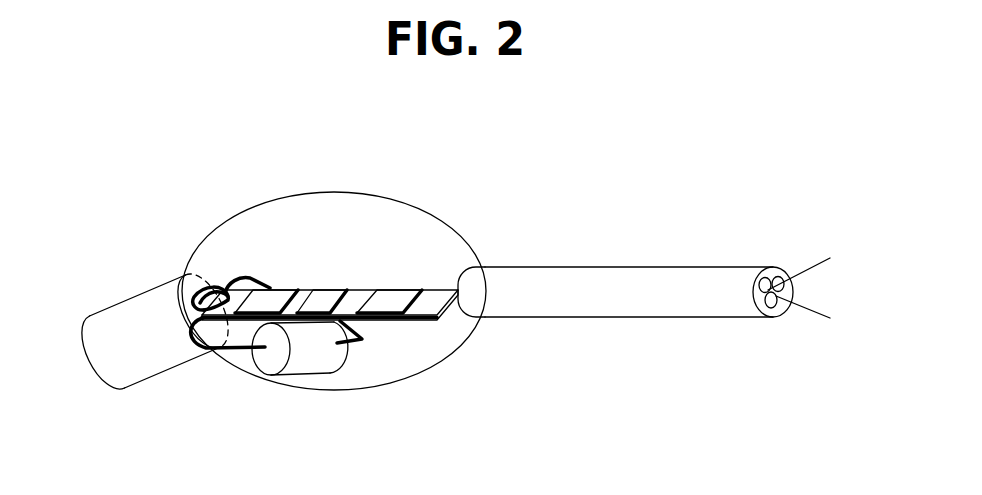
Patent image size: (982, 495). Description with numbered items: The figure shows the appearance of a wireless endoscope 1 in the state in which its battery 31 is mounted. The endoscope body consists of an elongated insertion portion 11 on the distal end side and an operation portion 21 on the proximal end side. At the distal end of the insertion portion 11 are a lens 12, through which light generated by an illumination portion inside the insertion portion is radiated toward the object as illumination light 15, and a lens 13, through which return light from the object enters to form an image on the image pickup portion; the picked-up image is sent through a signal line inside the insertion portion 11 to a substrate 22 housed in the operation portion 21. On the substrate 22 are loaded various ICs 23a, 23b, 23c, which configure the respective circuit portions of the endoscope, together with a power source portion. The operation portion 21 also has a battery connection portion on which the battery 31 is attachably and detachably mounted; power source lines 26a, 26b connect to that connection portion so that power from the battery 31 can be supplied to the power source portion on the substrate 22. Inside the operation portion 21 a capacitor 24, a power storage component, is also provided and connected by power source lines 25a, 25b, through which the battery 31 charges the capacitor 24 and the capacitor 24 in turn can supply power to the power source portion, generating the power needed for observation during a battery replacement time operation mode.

The wireless endoscope 1 is at (507, 213).
The insertion portion 11 is at (622, 266).
The lens 12 is at (768, 297).
The lens 13 is at (777, 305).
The illumination light 15 is at (815, 267).
The operation portion 21 is at (333, 191).
The substrate 22 is at (452, 300).
The IC 23a is at (273, 291).
The IC 23b is at (327, 298).
The IC 23c is at (397, 295).
The capacitor 24 is at (300, 363).
The power source line 25a is at (233, 348).
The power source line 25b is at (245, 277).
The power source line 26a is at (208, 290).
The power source line 26b is at (204, 291).
The battery 31 is at (112, 317).